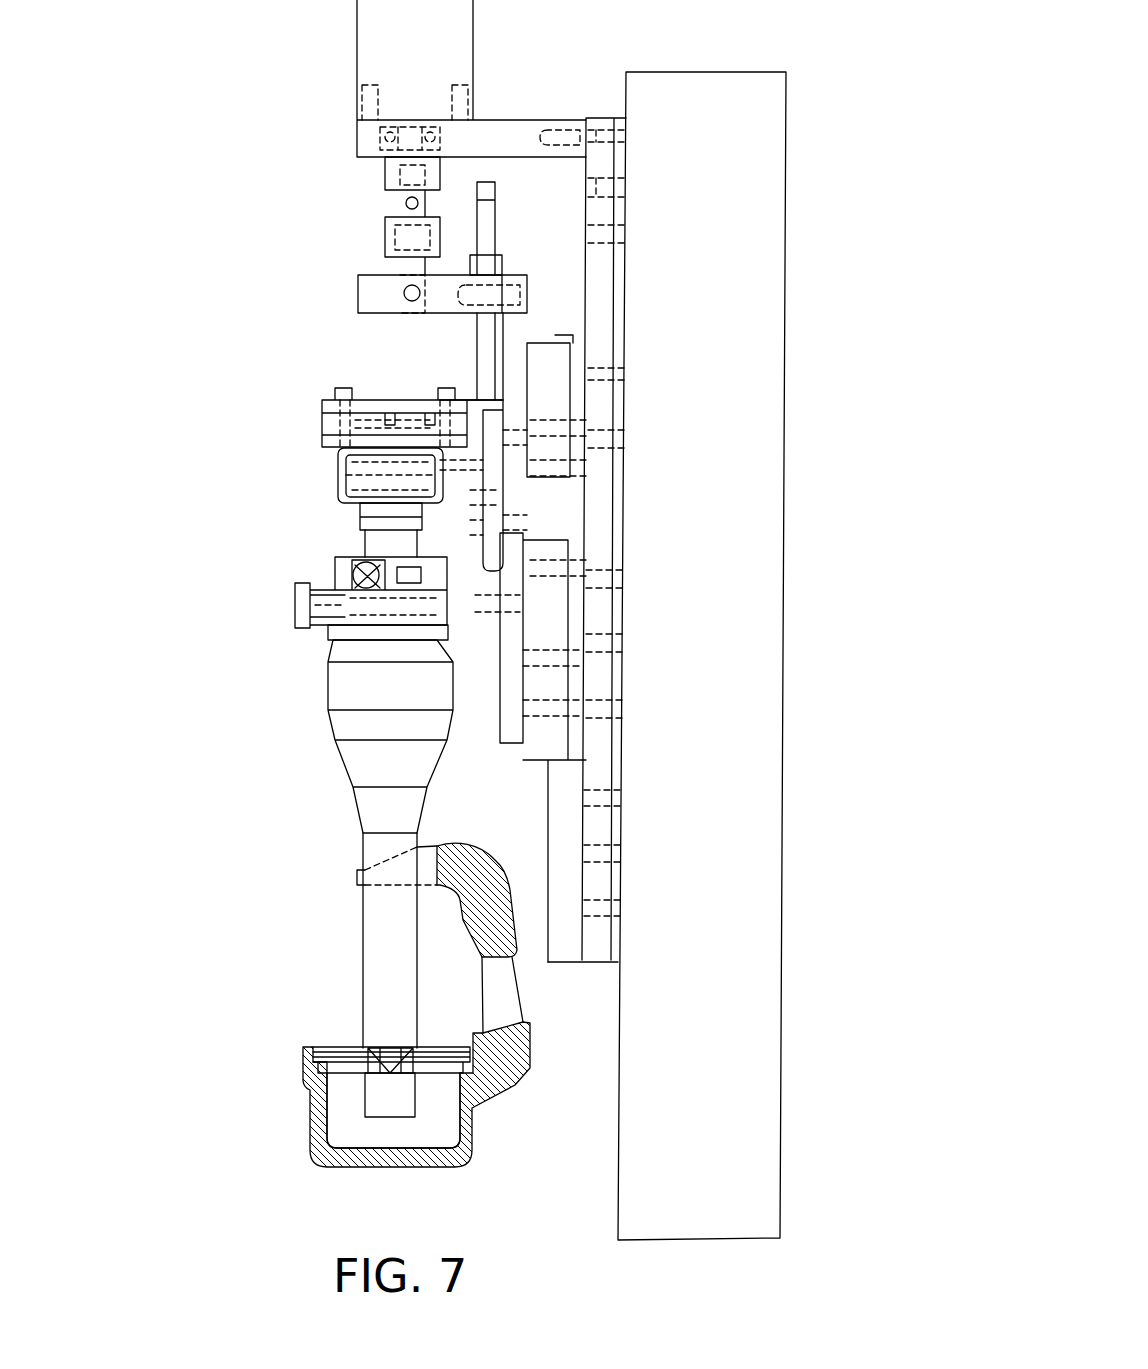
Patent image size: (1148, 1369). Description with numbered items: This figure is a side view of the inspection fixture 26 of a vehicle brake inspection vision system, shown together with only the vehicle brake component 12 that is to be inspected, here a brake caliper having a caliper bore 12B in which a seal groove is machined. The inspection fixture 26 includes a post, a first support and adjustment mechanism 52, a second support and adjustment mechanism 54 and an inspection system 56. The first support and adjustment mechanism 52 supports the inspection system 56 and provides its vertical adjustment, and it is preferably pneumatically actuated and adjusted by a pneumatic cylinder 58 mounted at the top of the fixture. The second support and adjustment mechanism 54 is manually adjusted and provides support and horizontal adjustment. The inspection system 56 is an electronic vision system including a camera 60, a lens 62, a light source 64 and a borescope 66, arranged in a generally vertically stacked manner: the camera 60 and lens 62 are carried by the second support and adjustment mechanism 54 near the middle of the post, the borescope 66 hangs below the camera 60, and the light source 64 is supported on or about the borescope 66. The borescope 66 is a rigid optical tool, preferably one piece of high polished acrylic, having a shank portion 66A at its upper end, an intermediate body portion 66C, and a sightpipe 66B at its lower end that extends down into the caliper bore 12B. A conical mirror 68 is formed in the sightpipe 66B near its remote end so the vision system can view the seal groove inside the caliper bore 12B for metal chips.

The vehicle brake component 12 is at (315, 1157).
The caliper bore 12B is at (447, 1108).
The inspection fixture 26 is at (183, 837).
The first support and adjustment mechanism 52 is at (528, 212).
The second support and adjustment mechanism 54 is at (307, 425).
The inspection system 56 is at (290, 672).
The pneumatic cylinder 58 is at (470, 72).
The camera 60 is at (455, 475).
The lens 62 is at (430, 525).
The light source 64 is at (455, 628).
The borescope 66 is at (455, 688).
The shank portion 66A is at (360, 545).
The sightpipe 66B is at (372, 957).
The intermediate body portion 66C is at (330, 698).
The mirror 68 is at (390, 1060).